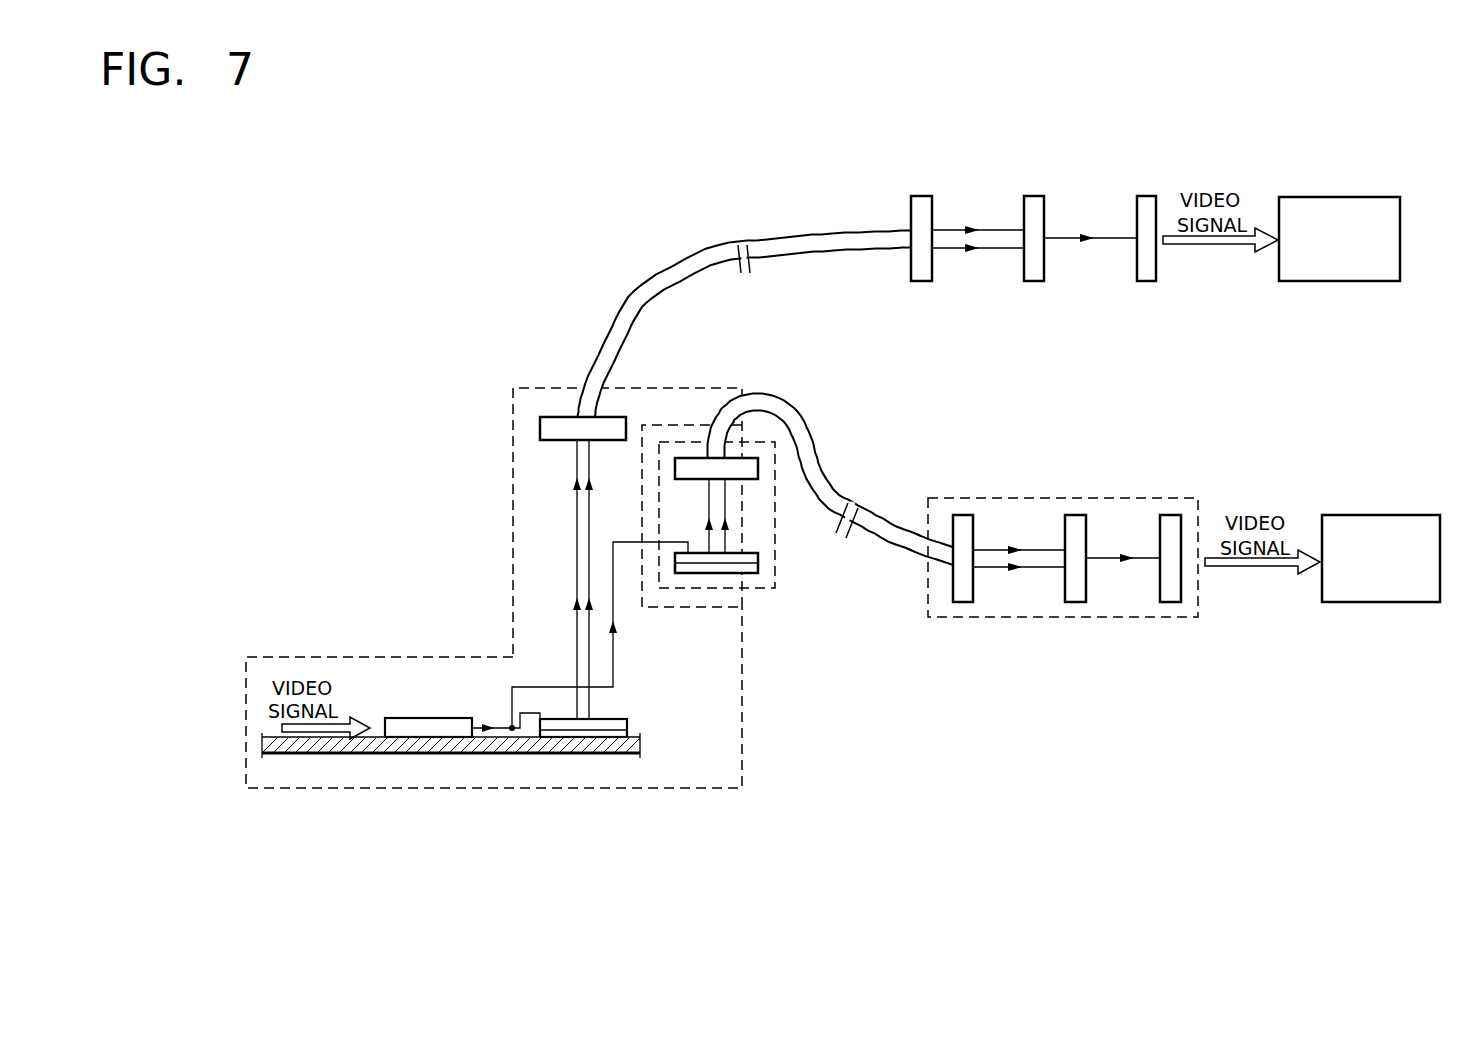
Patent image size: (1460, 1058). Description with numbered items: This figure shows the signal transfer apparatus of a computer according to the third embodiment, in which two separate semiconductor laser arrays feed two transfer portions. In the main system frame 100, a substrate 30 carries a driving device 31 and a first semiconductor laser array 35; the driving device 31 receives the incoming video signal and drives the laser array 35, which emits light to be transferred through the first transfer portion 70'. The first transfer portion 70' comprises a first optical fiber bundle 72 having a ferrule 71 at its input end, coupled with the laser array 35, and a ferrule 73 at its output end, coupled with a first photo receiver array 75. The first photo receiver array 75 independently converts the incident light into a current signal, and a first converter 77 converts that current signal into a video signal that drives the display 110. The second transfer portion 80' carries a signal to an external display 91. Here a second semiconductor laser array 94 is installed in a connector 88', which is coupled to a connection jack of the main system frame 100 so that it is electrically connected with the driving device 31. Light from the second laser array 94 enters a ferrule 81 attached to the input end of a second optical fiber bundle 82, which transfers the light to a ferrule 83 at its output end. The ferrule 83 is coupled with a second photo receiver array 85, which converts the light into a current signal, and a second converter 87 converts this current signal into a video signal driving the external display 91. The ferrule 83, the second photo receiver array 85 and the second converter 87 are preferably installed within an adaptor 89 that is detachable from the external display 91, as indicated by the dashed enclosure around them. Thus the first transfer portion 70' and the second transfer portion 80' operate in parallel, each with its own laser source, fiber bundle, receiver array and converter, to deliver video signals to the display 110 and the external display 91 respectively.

The main system frame 100 is at (277, 790).
The substrate 30 is at (352, 757).
The driving device 31 is at (435, 737).
The semiconductor laser array 35 is at (560, 737).
The first transfer portion 70' is at (816, 378).
The ferrule 71 is at (540, 428).
The first optical fiber bundle 72 is at (622, 302).
The ferrule 73 is at (921, 196).
The first photo receiver array 75 is at (1034, 196).
The first converter 77 is at (1150, 196).
The display 110 is at (1328, 197).
The connector 88' is at (802, 512).
The ferrule 81 is at (697, 458).
The second optical fiber bundle 82 is at (861, 545).
The second semiconductor laser array 94 is at (710, 573).
The second transfer portion 80' is at (1032, 616).
The adaptor 89 is at (1005, 617).
The ferrule 83 is at (963, 602).
The second photo receiver array 85 is at (1075, 602).
The second converter 87 is at (1170, 602).
The external display 91 is at (1362, 602).